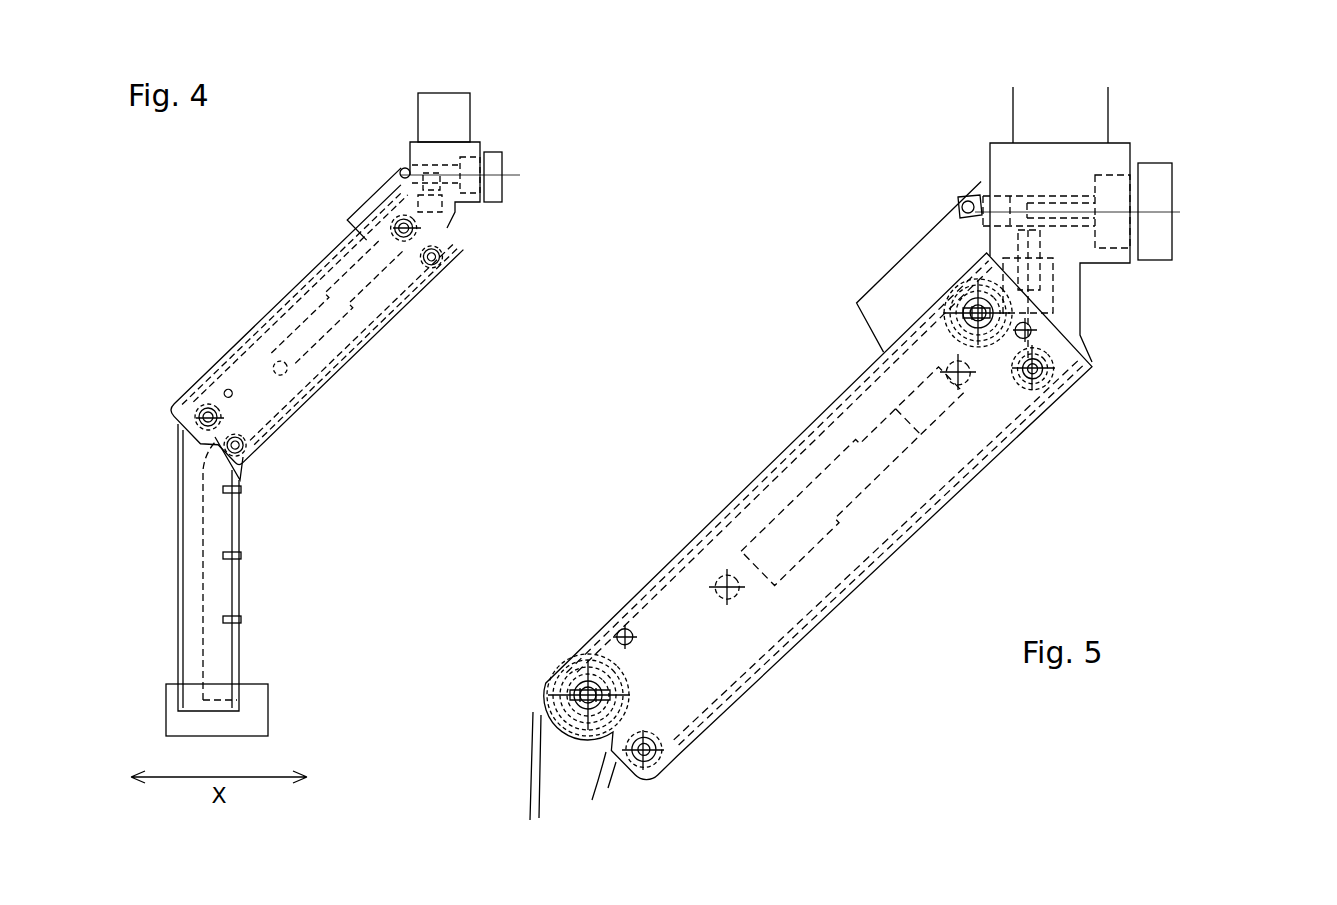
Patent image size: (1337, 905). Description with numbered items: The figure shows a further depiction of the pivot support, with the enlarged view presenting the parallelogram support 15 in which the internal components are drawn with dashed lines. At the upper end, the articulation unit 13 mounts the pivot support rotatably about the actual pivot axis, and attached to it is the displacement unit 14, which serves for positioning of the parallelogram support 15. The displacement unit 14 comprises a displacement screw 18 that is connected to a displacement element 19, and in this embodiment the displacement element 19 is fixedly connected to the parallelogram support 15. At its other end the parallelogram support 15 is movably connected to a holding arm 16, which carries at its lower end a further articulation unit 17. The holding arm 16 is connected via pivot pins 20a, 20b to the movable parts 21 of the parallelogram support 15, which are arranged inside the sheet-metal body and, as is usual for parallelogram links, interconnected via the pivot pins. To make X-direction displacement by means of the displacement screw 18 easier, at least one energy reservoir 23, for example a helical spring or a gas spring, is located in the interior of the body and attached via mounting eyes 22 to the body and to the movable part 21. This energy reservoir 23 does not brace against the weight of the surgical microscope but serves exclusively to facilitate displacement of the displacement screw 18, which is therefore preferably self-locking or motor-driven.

In FIG. 4, the articulation unit 13 is at (432, 105).
In FIG. 4, the displacement unit 14 is at (463, 150).
In FIG. 5, the displacement unit 14 is at (1110, 153).
In FIG. 4, the parallelogram support 15 is at (235, 357).
In FIG. 4, the holding arm 16 is at (217, 650).
In FIG. 4, the articulation unit 17 is at (256, 695).
In FIG. 4, the displacement screw 18 is at (490, 173).
In FIG. 5, the displacement screw 18 is at (1160, 185).
In FIG. 4, the displacement element 19 is at (377, 210).
In FIG. 5, the displacement element 19 is at (920, 258).
In FIG. 4, the pivot pin 20a is at (200, 412).
In FIG. 5, the pivot pin 20a is at (572, 671).
In FIG. 4, the pivot pin 20b is at (242, 443).
In FIG. 5, the pivot pin 20b is at (668, 740).
In FIG. 4, the movable parts 21 is at (242, 452).
In FIG. 5, the movable parts 21 is at (645, 772).
In FIG. 5, the mounting eyes 22 is at (727, 580).
In FIG. 5, the energy reservoir 23 is at (830, 491).